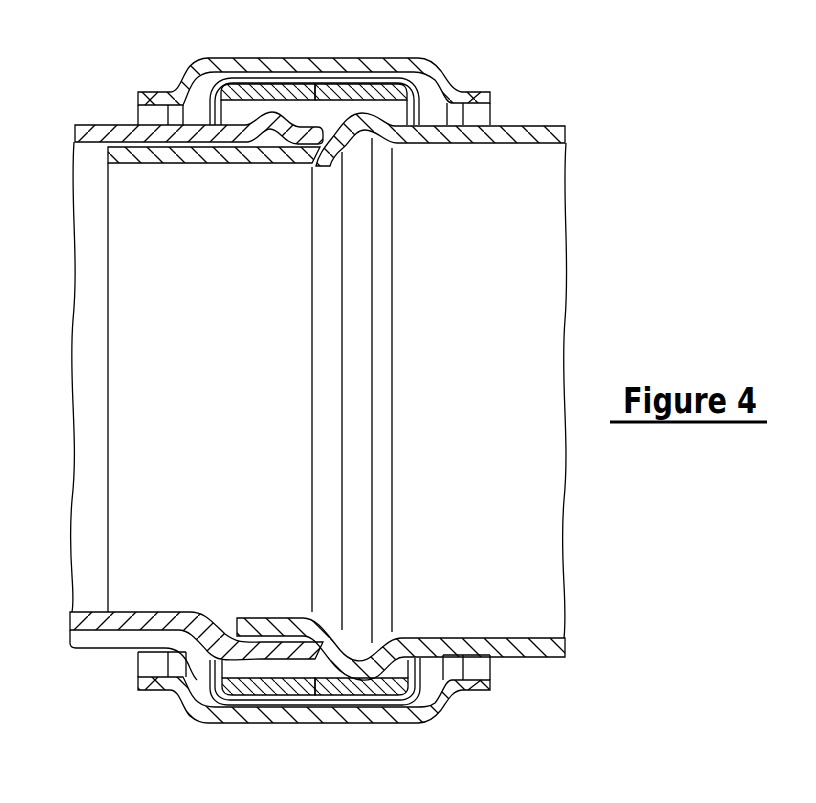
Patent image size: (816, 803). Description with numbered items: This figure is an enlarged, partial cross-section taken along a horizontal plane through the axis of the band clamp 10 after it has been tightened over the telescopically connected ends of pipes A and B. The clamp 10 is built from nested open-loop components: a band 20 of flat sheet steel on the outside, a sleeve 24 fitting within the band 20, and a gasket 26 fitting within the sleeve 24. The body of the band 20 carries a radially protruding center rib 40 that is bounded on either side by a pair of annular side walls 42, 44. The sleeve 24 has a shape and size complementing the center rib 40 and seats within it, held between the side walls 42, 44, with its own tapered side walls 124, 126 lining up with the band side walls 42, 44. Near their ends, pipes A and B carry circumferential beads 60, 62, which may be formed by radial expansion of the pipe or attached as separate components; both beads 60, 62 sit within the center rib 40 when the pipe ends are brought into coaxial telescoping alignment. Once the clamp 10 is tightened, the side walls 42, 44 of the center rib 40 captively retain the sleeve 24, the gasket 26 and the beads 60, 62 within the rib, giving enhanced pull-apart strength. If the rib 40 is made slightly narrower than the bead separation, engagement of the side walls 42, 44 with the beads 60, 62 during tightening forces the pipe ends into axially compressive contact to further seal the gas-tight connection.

The band clamp 10 is at (296, 399).
The band 20 is at (132, 680).
The sleeve 24 is at (202, 663).
The gasket 26 is at (414, 660).
The center rib 40 is at (316, 723).
The annular side wall 42 is at (172, 706).
The annular side wall 44 is at (462, 708).
The bead 60 is at (268, 127).
The bead 62 is at (362, 127).
The tapered side wall 124 is at (197, 705).
The tapered side wall 126 is at (432, 710).
The pipe A is at (122, 132).
The pipe B is at (513, 130).